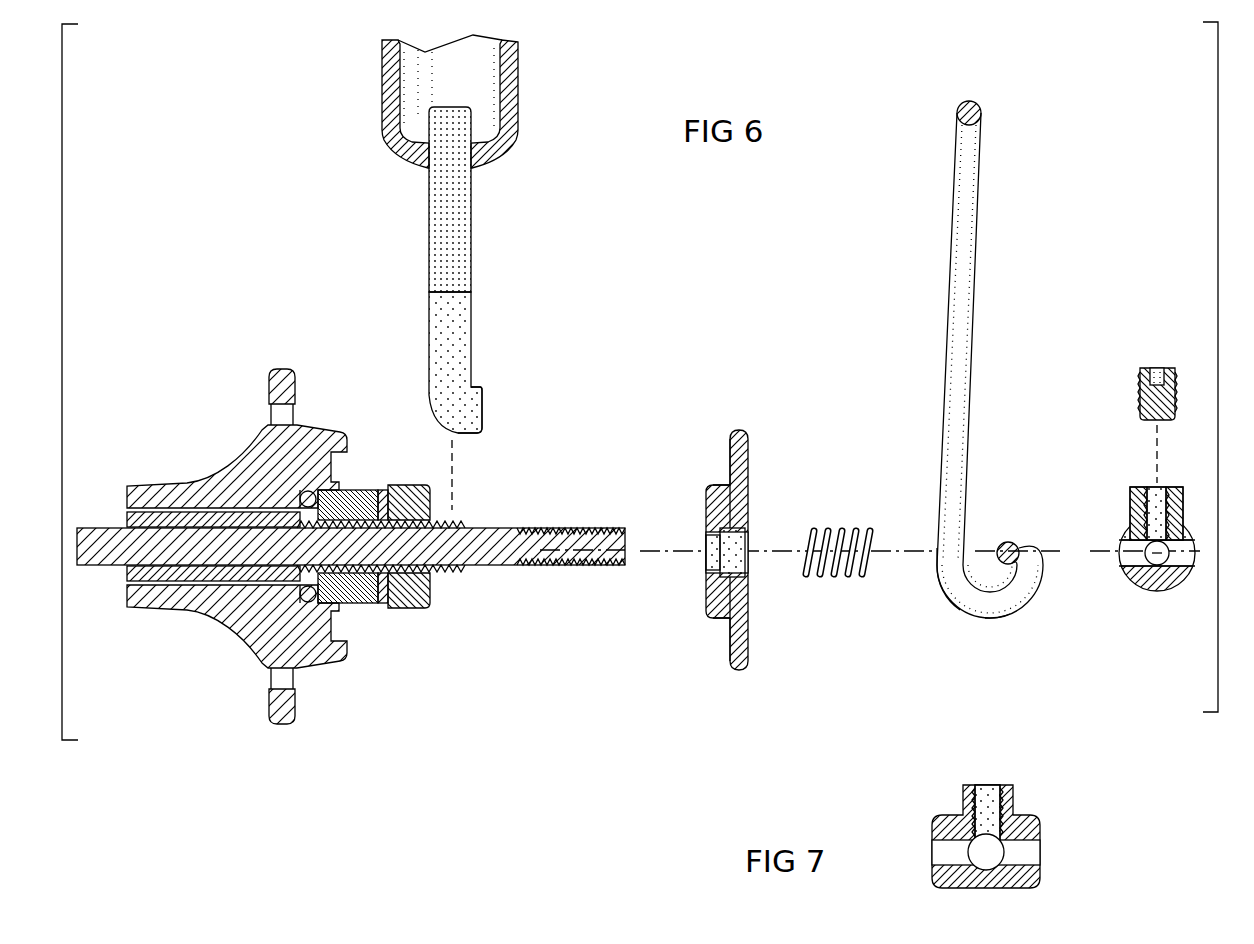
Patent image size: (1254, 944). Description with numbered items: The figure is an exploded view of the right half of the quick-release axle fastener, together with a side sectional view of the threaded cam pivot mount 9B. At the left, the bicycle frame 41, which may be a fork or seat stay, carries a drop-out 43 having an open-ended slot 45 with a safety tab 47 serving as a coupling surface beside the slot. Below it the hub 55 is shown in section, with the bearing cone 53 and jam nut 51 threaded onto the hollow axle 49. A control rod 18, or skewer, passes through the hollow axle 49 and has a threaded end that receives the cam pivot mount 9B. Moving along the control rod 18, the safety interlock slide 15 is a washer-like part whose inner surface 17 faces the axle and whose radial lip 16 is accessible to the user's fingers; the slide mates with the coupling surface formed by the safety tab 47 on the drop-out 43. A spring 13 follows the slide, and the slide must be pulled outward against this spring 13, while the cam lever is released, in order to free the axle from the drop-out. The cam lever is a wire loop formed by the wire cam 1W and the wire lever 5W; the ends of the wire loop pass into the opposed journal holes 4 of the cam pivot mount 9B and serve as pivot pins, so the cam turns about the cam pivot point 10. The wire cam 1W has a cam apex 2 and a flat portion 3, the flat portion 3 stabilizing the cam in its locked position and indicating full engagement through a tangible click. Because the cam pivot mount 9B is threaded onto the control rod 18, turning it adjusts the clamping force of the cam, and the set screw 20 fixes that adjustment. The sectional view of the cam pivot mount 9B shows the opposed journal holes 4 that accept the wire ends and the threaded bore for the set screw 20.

In FIG. 6, the bicycle frame 41 is at (382, 82).
In FIG. 6, the drop-out 43 is at (428, 240).
In FIG. 6, the open-ended slot 45 is at (450, 333).
In FIG. 6, the safety tab 47 is at (485, 410).
In FIG. 6, the hub 55 is at (230, 460).
In FIG. 6, the bearing cone 53 is at (362, 608).
In FIG. 6, the jam nut 51 is at (420, 602).
In FIG. 6, the axle 49 is at (455, 583).
In FIG. 6, the control rod 18 is at (517, 530).
In FIG. 6, the safety interlock slide 15 is at (729, 392).
In FIG. 6, the inner surface of slide 17 is at (705, 600).
In FIG. 6, the radial lip 16 is at (730, 664).
In FIG. 6, the spring 13 is at (840, 505).
In FIG. 6, the wire lever 5W is at (980, 210).
In FIG. 6, the flat portion of cam 3 is at (938, 553).
In FIG. 6, the cam apex 2 is at (941, 583).
In FIG. 6, the cam pivot point 10 is at (1005, 552).
In FIG. 6, the wire cam 1W is at (1003, 620).
In FIG. 6, the set screw 20 is at (1157, 366).
In FIG. 6, the cam pivot mount 9B is at (1135, 597).
In FIG. 7, the cam pivot mount 9B is at (1045, 815).
In FIG. 6, the journal for pivot pin 4 is at (1160, 568).
In FIG. 7, the journal for pivot pin 4 is at (943, 850).